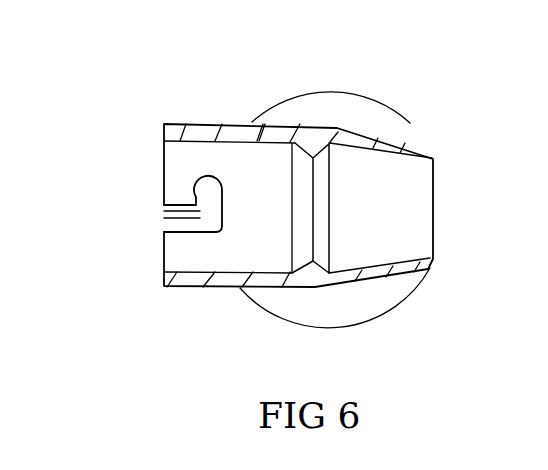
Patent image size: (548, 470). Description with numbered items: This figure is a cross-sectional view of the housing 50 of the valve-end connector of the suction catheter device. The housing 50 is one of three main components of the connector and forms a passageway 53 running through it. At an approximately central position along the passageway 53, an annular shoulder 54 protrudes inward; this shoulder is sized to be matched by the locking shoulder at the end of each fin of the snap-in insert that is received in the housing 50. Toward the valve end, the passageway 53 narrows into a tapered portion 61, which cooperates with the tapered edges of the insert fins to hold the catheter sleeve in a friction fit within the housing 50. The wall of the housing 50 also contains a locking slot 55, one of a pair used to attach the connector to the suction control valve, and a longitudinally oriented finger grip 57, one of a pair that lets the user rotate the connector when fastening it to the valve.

The housing 50 is at (339, 66).
The passageway 53 is at (277, 168).
The annular shoulder 54 is at (320, 264).
The locking slot 55 is at (180, 232).
The finger grip 57 is at (386, 112).
The tapered portion 61 is at (410, 122).